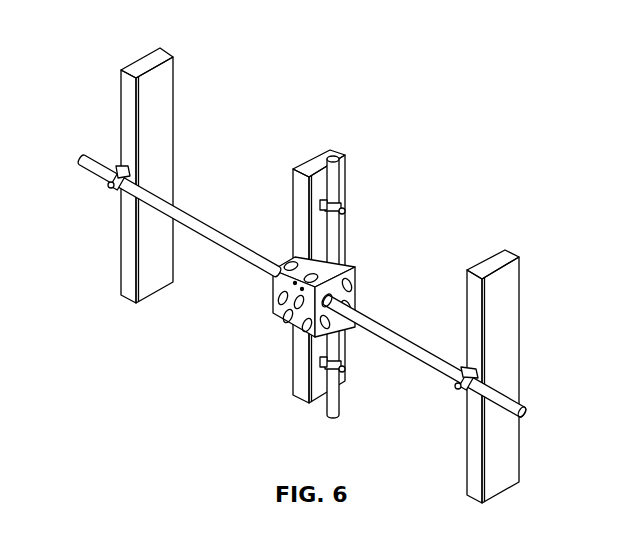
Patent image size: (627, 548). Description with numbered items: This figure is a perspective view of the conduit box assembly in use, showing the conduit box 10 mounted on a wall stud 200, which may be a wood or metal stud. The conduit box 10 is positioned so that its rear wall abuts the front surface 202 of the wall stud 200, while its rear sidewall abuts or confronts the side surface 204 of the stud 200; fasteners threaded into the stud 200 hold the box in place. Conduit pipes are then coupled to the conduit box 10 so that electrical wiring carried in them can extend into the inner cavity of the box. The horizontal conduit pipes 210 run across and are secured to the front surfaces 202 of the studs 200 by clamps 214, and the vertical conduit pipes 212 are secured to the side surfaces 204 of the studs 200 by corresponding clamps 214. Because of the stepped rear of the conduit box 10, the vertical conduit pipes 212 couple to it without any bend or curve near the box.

The conduit box 10 is at (357, 272).
The wall stud 200 is at (325, 266).
The front surface 202 is at (131, 107).
The side surface 204 is at (153, 105).
The horizontal conduit pipe 210 is at (227, 249).
The vertical conduit pipe 212 is at (340, 182).
The clamp 214 is at (108, 186).